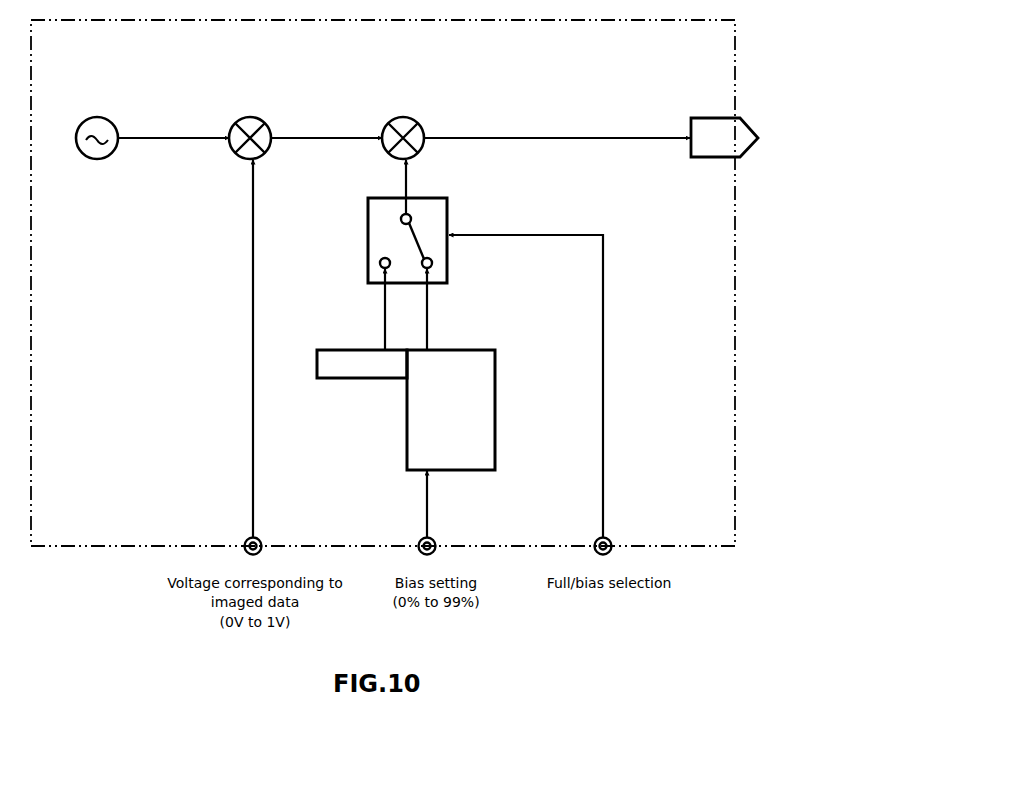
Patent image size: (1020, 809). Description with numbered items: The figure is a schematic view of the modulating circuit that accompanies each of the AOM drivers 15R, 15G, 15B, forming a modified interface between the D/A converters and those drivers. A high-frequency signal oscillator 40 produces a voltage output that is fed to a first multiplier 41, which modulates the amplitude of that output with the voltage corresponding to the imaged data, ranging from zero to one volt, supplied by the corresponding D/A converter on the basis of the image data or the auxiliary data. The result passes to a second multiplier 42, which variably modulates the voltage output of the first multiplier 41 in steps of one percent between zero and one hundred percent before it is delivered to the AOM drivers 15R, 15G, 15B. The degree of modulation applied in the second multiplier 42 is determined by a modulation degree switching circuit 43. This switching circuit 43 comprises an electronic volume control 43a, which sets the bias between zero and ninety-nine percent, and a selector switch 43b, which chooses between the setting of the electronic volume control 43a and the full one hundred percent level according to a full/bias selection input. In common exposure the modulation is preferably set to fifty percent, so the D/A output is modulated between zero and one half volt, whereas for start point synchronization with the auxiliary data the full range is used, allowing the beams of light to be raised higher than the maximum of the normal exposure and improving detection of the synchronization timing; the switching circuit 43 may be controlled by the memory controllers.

The high-frequency signal oscillator 40 is at (110, 121).
The first multiplier 41 is at (267, 118).
The second multiplier 42 is at (417, 119).
The modulation degree switching circuit 43 is at (442, 324).
The electronic volume control 43a is at (342, 350).
The selector switch 43b is at (447, 198).
The AOM driver 15R is at (805, 121).
The AOM driver 15G is at (805, 121).
The AOM driver 15B is at (745, 120).